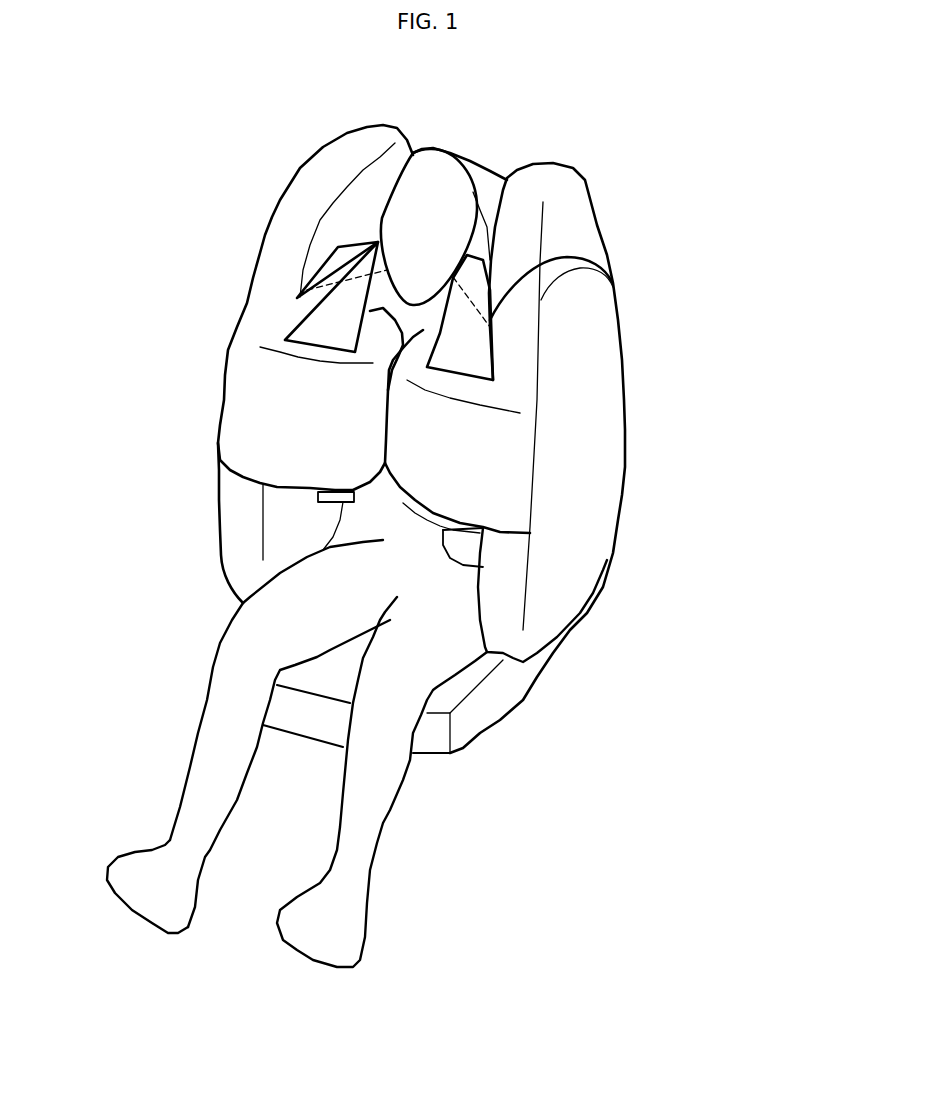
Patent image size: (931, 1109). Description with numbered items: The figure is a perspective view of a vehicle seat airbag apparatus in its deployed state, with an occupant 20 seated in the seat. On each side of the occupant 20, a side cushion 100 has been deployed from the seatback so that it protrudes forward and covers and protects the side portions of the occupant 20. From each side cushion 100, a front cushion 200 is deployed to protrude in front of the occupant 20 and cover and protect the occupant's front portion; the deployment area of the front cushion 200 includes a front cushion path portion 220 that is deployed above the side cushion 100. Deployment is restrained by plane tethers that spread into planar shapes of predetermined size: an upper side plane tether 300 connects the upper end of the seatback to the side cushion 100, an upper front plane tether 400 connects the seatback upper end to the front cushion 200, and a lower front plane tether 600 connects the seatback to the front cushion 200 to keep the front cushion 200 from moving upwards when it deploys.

The occupant 20 is at (383, 542).
The side cushion 100 is at (260, 253).
The front cushion 200 is at (297, 413).
The front cushion path portion 220 is at (378, 193).
The upper side plane tether 300 is at (333, 267).
The upper front plane tether 400 is at (325, 327).
The lower front plane tether 600 is at (317, 493).